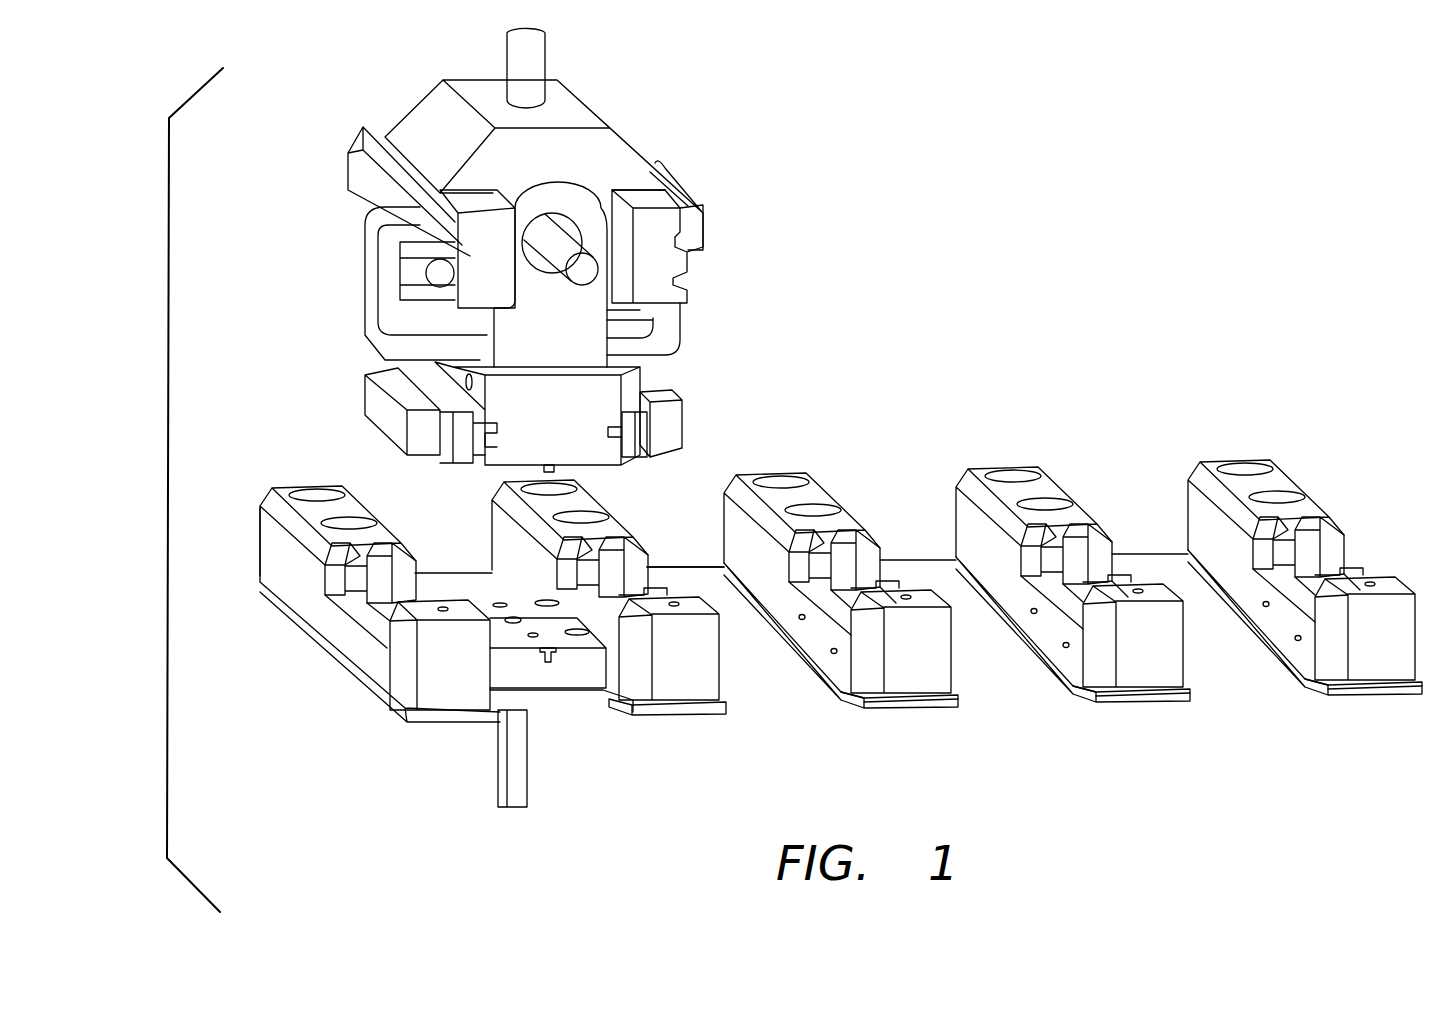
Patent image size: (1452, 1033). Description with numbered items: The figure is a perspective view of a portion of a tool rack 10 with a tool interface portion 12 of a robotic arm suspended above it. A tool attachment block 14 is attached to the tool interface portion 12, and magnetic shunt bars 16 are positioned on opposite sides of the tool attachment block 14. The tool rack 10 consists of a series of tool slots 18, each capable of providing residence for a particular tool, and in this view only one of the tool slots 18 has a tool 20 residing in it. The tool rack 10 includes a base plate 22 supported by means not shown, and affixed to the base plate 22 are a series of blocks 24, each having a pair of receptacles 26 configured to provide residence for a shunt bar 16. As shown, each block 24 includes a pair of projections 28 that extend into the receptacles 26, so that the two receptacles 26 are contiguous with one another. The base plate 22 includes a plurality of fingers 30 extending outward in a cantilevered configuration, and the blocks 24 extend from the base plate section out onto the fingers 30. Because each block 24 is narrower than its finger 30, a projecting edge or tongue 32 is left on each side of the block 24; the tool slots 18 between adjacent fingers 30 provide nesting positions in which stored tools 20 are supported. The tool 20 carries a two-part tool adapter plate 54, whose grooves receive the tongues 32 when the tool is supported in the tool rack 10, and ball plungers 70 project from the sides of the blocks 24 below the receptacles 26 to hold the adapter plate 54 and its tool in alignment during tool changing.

The tool rack 10 is at (885, 370).
The tool interface portion 12 is at (620, 153).
The tool attachment block 14 is at (577, 425).
The magnetic shunt bars 16 is at (380, 410).
The tool slots 18 is at (767, 673).
The tool 20 is at (565, 700).
The base plate 22 is at (387, 703).
The blocks 24 is at (817, 487).
The receptacles 26 is at (898, 573).
The projections 28 is at (840, 530).
The fingers 30 is at (887, 702).
The tongue 32 is at (732, 690).
The tool adapter plate 54 is at (517, 672).
The ball plungers 70 is at (882, 648).